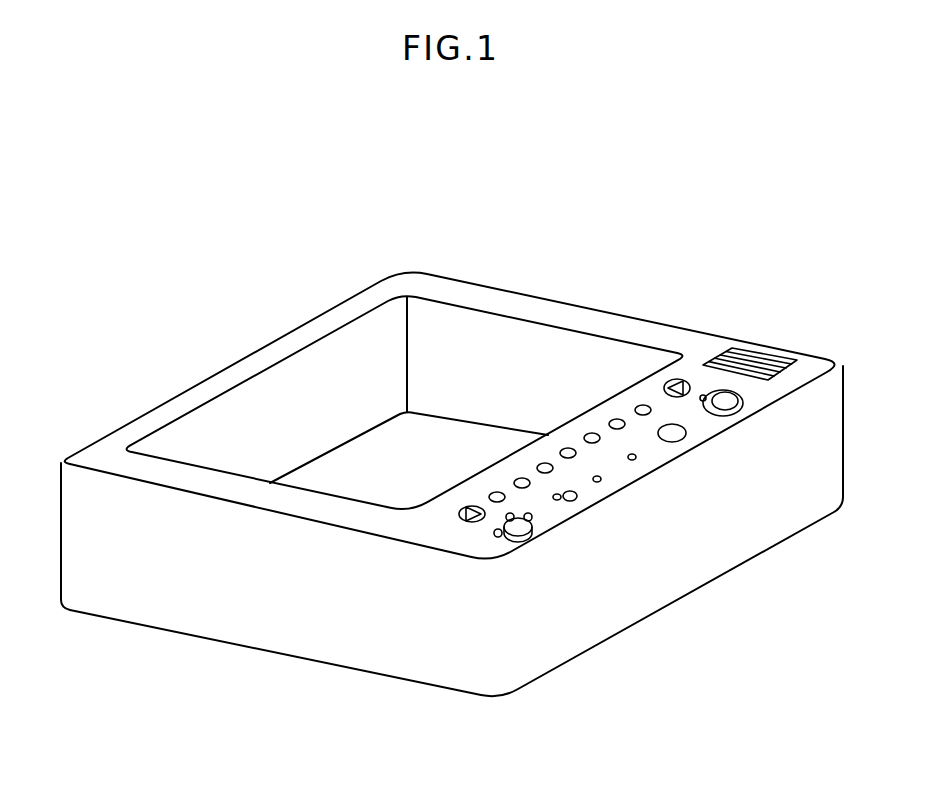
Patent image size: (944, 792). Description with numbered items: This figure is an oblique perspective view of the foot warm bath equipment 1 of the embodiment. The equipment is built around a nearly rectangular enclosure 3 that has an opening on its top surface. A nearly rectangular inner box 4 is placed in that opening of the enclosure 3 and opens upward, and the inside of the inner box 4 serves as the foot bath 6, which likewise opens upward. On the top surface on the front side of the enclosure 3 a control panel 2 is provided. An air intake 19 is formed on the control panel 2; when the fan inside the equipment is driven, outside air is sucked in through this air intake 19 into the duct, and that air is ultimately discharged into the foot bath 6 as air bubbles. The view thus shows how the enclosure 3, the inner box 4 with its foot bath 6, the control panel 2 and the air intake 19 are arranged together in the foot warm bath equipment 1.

The foot warm bath equipment 1 is at (548, 256).
The control panel 2 is at (705, 432).
The enclosure 3 is at (61, 488).
The inner box 4 is at (243, 403).
The foot bath 6 is at (356, 404).
The air intake 19 is at (752, 356).